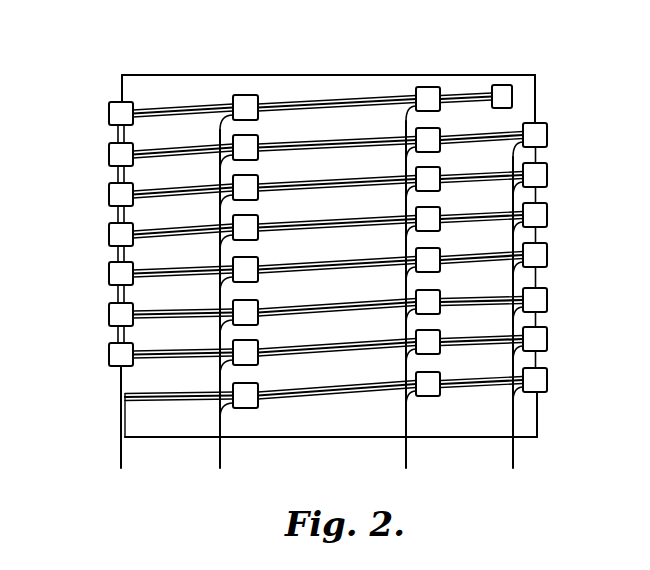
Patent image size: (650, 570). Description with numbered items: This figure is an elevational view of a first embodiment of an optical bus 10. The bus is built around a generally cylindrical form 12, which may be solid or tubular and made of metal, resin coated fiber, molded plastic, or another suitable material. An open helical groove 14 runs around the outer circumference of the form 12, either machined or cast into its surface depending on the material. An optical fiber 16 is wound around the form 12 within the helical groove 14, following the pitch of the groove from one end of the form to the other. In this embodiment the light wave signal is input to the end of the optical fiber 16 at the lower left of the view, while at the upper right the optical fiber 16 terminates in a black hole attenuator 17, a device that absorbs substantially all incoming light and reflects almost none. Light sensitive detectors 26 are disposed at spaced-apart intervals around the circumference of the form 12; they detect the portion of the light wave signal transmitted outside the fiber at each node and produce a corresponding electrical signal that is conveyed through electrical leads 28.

The optical bus 10 is at (200, 61).
The cylindrical form 12 is at (526, 108).
The helical groove 14 is at (140, 407).
The optical fiber 16 is at (123, 400).
The black hole attenuator 17 is at (506, 85).
The light sensitive detectors 26 is at (428, 88).
The electrical leads 28 is at (223, 462).